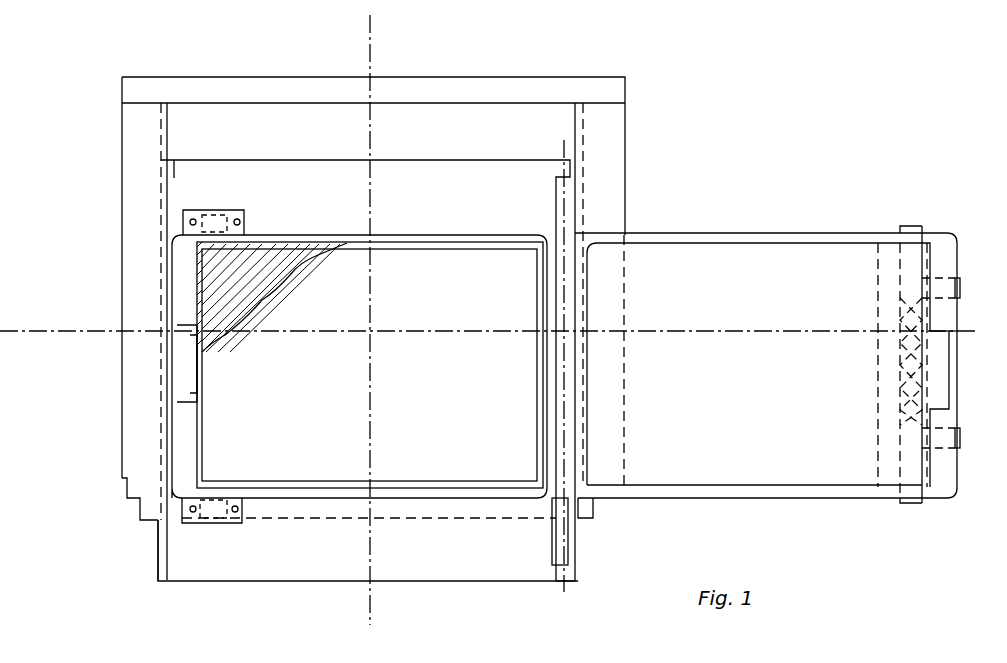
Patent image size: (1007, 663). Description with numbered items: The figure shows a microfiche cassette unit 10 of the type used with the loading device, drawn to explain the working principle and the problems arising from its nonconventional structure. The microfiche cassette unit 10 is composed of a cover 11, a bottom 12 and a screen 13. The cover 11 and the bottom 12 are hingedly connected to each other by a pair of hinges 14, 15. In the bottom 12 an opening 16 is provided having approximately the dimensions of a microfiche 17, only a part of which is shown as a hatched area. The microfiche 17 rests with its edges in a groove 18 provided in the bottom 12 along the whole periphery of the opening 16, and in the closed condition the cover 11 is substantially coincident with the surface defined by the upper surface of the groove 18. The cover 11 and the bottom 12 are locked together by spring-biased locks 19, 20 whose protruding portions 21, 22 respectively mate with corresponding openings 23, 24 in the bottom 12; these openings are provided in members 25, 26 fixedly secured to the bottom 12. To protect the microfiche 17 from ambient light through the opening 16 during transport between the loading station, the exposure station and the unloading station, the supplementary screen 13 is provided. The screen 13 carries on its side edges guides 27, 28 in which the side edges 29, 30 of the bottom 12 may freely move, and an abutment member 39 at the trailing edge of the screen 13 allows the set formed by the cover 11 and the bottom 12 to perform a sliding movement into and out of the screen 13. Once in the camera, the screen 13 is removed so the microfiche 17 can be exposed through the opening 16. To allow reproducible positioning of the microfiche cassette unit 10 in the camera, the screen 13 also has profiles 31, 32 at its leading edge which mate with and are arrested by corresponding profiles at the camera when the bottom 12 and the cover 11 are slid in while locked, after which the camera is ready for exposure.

The microfiche cassette unit 10 is at (754, 128).
The cover 11 is at (755, 258).
The bottom 12 is at (480, 565).
The screen 13 is at (448, 122).
The hinge 14 is at (578, 562).
The hinge 15 is at (568, 210).
The opening 16 is at (410, 460).
The microfiche 17 is at (262, 286).
The groove 18 is at (523, 484).
The spring-biased lock 19 is at (905, 470).
The spring-biased lock 20 is at (915, 262).
The protruding portion 21 is at (912, 503).
The protruding portion 22 is at (918, 226).
The opening 23 is at (210, 508).
The opening 24 is at (215, 217).
The member 25 is at (243, 508).
The member 26 is at (240, 222).
The guide 27 is at (583, 128).
The guide 28 is at (160, 103).
The side edge 29 is at (570, 555).
The side edge 30 is at (160, 565).
The profile 31 is at (138, 512).
The profile 32 is at (592, 505).
The abutment member 39 is at (248, 92).